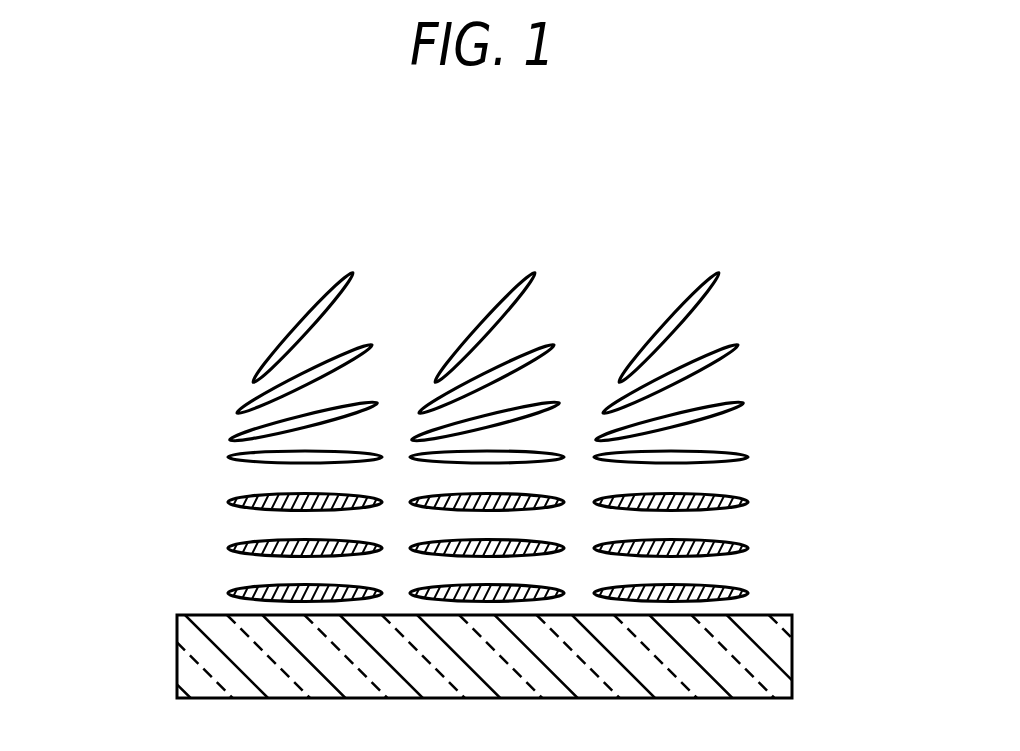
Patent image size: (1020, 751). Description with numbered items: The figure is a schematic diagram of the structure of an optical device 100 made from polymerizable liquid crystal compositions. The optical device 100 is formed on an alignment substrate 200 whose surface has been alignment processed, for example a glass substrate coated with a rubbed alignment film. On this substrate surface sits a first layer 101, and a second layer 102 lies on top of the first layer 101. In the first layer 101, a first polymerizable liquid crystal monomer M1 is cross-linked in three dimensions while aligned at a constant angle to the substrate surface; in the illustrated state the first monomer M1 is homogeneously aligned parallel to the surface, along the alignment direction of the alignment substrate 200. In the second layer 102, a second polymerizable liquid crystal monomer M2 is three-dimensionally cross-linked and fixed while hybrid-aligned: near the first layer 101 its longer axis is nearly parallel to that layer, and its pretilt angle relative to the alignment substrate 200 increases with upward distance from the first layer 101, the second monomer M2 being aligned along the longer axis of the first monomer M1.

The optical device 100 is at (140, 266).
The first layer 101 is at (815, 492).
The second layer 102 is at (815, 265).
The alignment substrate 200 is at (792, 652).
The first polymerizable liquid crystal monomer M1 is at (228, 502).
The second polymerizable liquid crystal monomer M2 is at (297, 322).